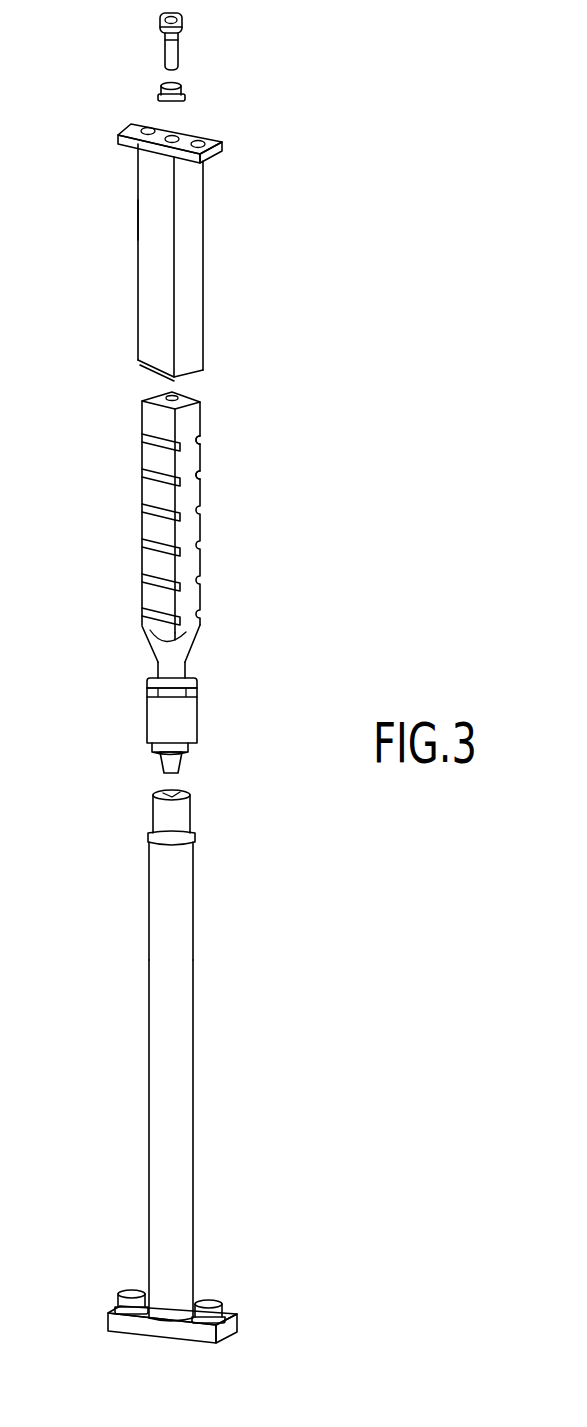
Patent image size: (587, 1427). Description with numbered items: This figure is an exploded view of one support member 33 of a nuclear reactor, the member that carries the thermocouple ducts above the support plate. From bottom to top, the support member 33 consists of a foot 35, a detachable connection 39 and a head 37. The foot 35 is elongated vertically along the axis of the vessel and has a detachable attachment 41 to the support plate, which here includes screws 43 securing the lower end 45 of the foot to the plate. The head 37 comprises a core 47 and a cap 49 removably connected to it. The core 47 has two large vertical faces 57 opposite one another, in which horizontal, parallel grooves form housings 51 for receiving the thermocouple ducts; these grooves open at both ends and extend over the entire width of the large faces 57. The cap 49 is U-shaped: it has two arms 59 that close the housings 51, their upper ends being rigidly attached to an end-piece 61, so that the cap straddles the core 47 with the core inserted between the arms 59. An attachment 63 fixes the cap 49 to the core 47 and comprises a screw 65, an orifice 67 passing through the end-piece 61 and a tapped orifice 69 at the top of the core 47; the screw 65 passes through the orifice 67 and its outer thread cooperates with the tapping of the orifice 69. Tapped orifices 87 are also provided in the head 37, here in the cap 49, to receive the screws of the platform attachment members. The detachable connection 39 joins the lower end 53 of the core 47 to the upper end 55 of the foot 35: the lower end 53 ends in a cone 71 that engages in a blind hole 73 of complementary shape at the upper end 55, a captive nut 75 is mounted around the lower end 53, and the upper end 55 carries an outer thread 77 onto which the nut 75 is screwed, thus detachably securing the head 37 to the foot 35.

The support member 33 is at (181, 522).
The foot 35 is at (173, 1053).
The head 37 is at (169, 231).
The detachable connection 39 is at (193, 725).
The detachable attachment 41 is at (168, 1297).
The screws 43 is at (138, 1292).
The lower end 45 is at (163, 1328).
The core 47 is at (163, 517).
The cap 49 is at (91, 220).
The housings 51 is at (200, 573).
The lower end 53 is at (160, 649).
The upper end 55 is at (155, 856).
The large vertical faces 57 is at (158, 521).
The arm 59 is at (190, 273).
The end-piece 61 is at (212, 141).
The attachment 63 is at (228, 70).
The screw 65 is at (182, 53).
The orifice 67 is at (173, 135).
The tapped orifice 69 is at (178, 397).
The cone 71 is at (158, 759).
The blind hole 73 is at (176, 791).
The nut 75 is at (186, 714).
The outer thread 77 is at (181, 820).
The tapped orifices 87 is at (145, 128).